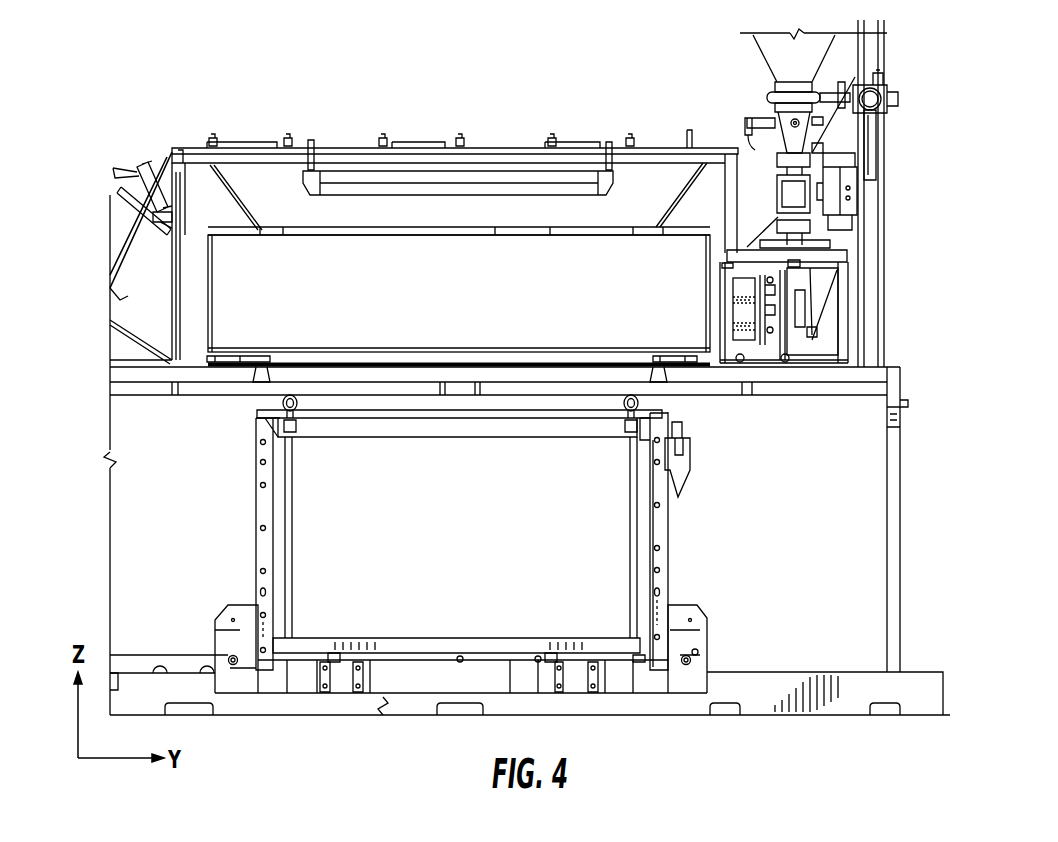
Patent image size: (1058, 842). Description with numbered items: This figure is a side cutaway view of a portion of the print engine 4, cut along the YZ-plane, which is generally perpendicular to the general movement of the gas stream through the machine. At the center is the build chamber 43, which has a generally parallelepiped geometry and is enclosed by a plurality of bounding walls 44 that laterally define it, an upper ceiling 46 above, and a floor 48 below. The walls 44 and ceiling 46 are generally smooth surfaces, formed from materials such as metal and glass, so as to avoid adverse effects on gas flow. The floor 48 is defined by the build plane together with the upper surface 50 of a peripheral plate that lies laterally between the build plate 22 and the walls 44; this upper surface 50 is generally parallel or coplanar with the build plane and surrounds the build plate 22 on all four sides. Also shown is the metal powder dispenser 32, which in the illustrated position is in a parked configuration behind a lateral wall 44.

The print engine 4 is at (352, 84).
The build plate 22 is at (502, 413).
The metal powder dispenser 32 is at (790, 298).
The build chamber 43 is at (256, 298).
The bounding walls 44 is at (207, 293).
The upper ceiling 46 is at (447, 236).
The floor 48 is at (300, 358).
The upper surface 50 is at (576, 350).